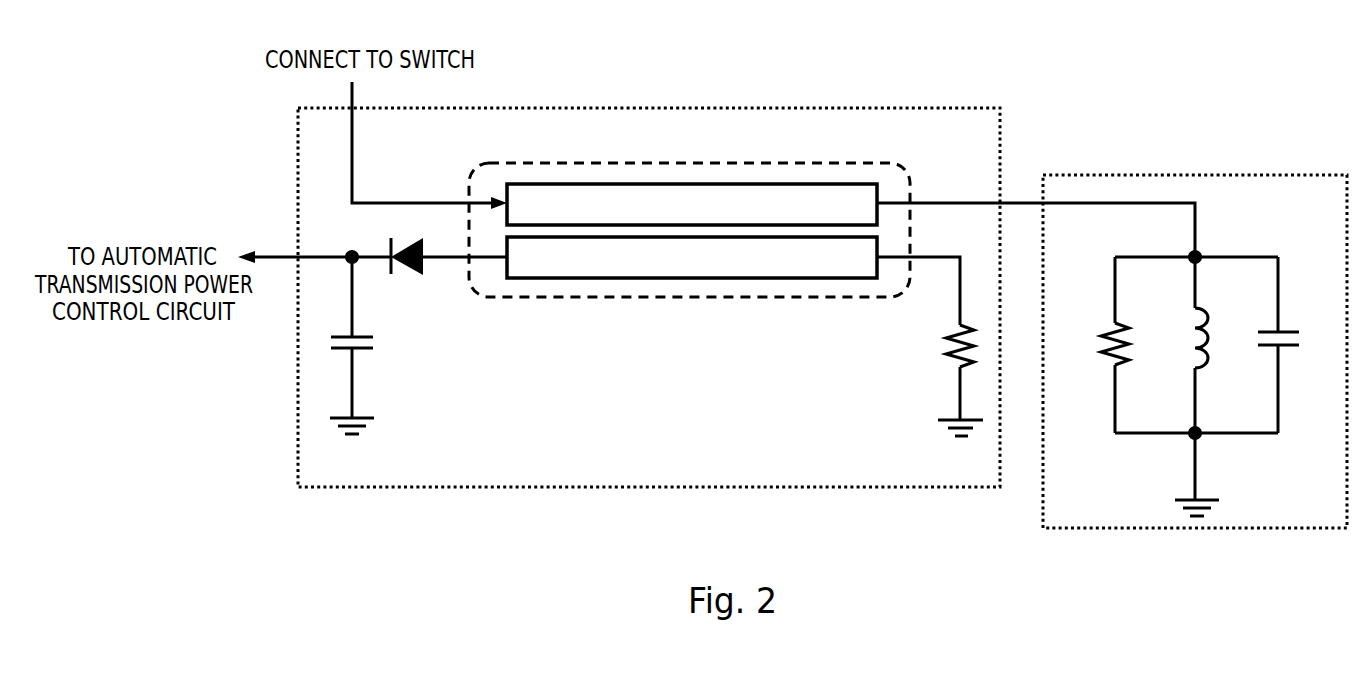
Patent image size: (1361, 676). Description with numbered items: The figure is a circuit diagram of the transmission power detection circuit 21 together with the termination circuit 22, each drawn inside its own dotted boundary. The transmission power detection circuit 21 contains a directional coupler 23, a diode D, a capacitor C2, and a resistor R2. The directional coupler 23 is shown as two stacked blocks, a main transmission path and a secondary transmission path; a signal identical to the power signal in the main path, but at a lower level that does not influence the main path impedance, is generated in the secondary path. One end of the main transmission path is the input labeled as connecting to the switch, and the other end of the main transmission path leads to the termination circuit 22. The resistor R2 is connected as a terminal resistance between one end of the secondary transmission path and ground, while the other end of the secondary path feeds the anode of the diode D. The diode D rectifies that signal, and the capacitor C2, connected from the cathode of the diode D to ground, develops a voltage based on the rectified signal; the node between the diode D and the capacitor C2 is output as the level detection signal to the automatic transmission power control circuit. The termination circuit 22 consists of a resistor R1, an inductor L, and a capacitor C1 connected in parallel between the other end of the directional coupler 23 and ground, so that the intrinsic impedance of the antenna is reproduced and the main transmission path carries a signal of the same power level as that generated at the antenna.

The transmission power detection circuit 21 is at (730, 108).
The termination circuit 22 is at (1228, 175).
The directional coupler 23 is at (905, 175).
The diode D is at (429, 275).
The capacitor C2 is at (369, 345).
The resistor R2 is at (930, 346).
The resistor R1 is at (1096, 345).
The inductor L is at (1190, 345).
The capacitor C1 is at (1294, 345).